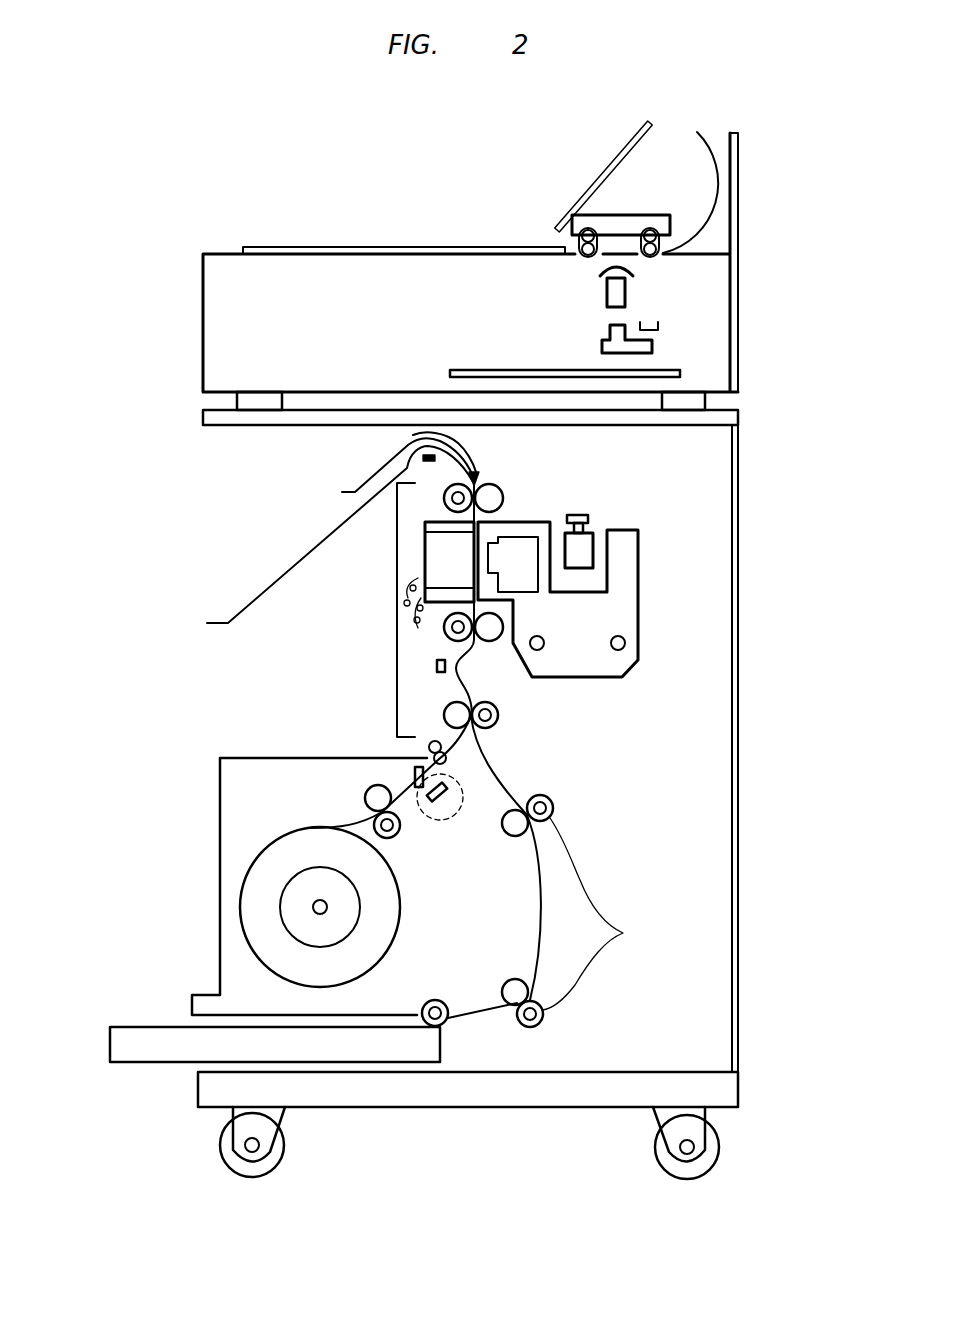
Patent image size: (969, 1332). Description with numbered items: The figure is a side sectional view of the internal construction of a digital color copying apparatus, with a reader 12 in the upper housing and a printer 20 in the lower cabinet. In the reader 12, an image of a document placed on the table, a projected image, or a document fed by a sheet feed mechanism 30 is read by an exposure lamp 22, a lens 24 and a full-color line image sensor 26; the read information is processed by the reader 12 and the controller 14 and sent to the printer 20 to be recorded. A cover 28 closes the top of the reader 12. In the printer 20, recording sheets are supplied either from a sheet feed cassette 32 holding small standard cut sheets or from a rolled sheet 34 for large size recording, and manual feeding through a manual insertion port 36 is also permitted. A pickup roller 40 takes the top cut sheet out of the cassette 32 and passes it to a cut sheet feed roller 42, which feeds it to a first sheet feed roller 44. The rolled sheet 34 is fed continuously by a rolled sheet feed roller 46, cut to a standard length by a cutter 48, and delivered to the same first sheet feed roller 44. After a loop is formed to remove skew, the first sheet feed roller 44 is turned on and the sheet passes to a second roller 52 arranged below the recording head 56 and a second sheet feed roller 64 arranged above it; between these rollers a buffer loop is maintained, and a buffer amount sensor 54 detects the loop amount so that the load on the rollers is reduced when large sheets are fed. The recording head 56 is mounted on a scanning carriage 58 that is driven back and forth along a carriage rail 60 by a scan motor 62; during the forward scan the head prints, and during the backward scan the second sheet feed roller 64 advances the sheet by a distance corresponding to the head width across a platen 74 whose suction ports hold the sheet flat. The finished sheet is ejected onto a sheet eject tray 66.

The reader 12 is at (738, 333).
The controller 14 is at (680, 372).
The printer 20 is at (738, 830).
The exposure lamp 22 is at (600, 272).
The lens 24 is at (625, 292).
The image sensor 26 is at (602, 333).
The cover 28 is at (338, 247).
The sheet feed mechanism 30 is at (667, 225).
The sheet feed cassette 32 is at (133, 1057).
The rolled sheet 34 is at (258, 922).
The manual insertion port 36 is at (381, 704).
The pickup roller 40 is at (447, 1020).
The cut sheet feed roller 42 is at (623, 933).
The first sheet feed roller 44 is at (495, 728).
The rolled sheet feed roller 46 is at (392, 840).
The cutter 48 is at (457, 808).
The second roller 52 is at (487, 641).
The buffer amount sensor 54 is at (437, 666).
The recording head 56 is at (527, 590).
The scanning carriage 58 is at (430, 745).
The carriage rail 60 is at (537, 650).
The scan motor 62 is at (585, 547).
The second sheet feed roller 64 is at (500, 494).
The sheet eject tray 66 is at (217, 620).
The platen 74 is at (475, 557).